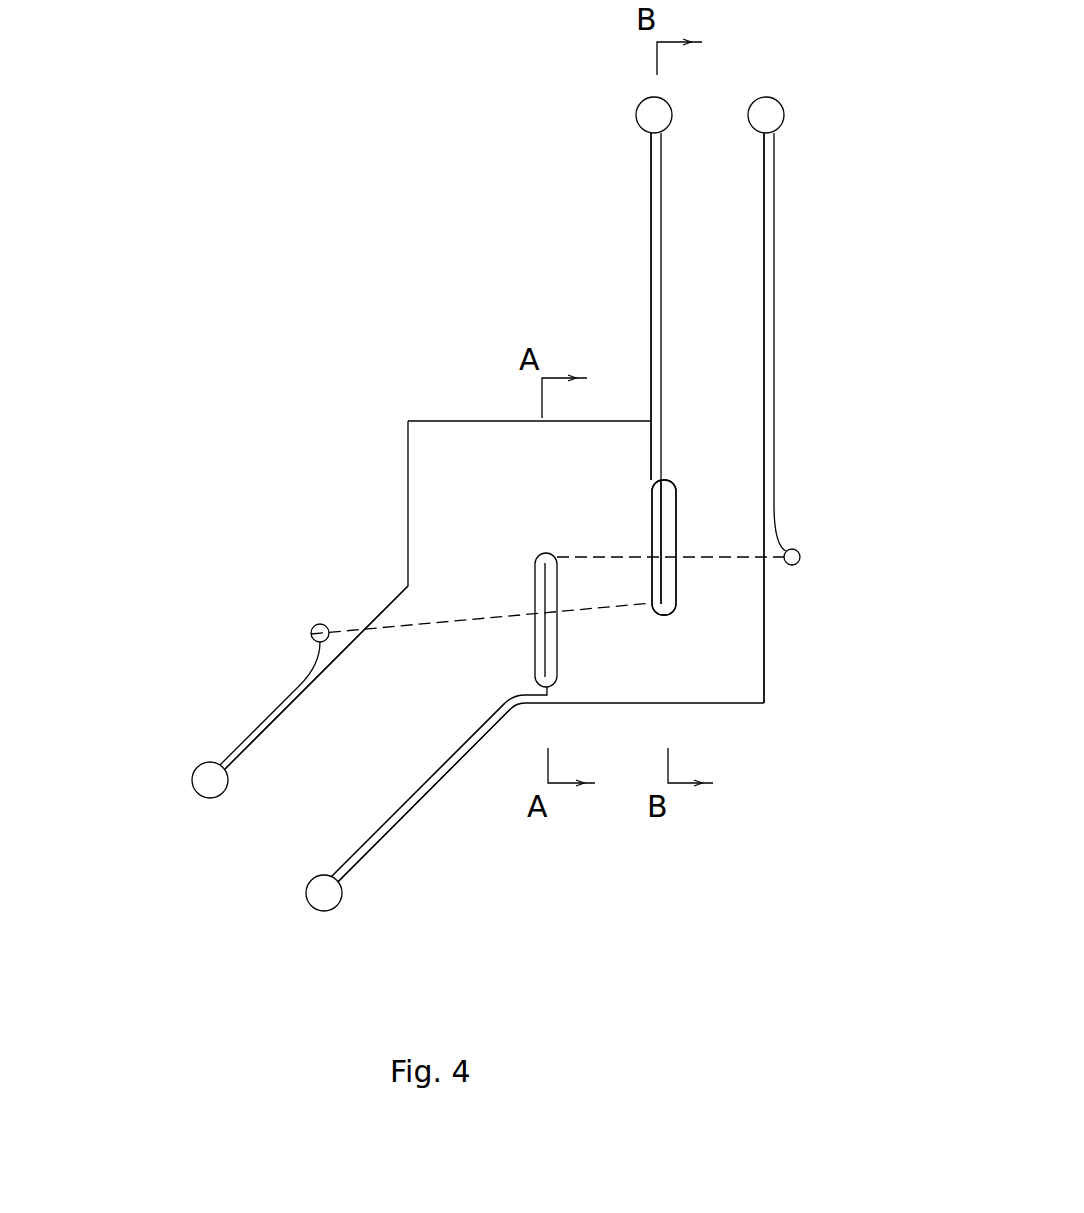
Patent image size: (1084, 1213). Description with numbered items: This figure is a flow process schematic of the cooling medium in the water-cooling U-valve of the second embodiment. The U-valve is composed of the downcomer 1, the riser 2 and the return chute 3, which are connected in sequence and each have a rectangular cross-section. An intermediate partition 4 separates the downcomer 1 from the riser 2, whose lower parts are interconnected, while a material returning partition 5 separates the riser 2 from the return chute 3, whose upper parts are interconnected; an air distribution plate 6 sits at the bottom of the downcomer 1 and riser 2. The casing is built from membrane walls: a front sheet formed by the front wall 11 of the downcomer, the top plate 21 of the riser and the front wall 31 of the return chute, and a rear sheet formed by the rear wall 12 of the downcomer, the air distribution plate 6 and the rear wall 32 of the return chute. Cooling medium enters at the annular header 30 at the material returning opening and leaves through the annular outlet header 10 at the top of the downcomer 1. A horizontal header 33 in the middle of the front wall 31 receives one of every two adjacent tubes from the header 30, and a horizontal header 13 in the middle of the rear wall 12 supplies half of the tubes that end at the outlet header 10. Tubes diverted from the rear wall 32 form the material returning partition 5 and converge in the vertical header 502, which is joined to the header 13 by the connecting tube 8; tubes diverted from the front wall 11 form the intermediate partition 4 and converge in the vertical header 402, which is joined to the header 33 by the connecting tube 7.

The downcomer 1 is at (713, 413).
The riser 2 is at (679, 614).
The return chute 3 is at (437, 697).
The intermediate partition 4 is at (664, 540).
The material returning partition 5 is at (552, 657).
The air distribution plate 6 is at (686, 706).
The connecting tube for the headers 7 is at (447, 613).
The connecting tube for the headers 8 is at (738, 559).
The outlet header for the loop seal 10 is at (671, 131).
The front wall of the downcomer 11 is at (659, 283).
The rear wall of the downcomer 12 is at (764, 247).
The horizontal header for the rear wall of the downcomer 13 is at (798, 563).
The top plate of the riser 21 is at (530, 419).
The header for the material returning opening 30 is at (308, 912).
The front wall of the return chute 31 is at (263, 731).
The rear wall of the return chute 32 is at (400, 808).
The header for the front wall of the return chute 33 is at (315, 622).
The right vertical header for the intermediate partition 402 is at (600, 575).
The right vertical header for the material returning partition 502 is at (537, 555).